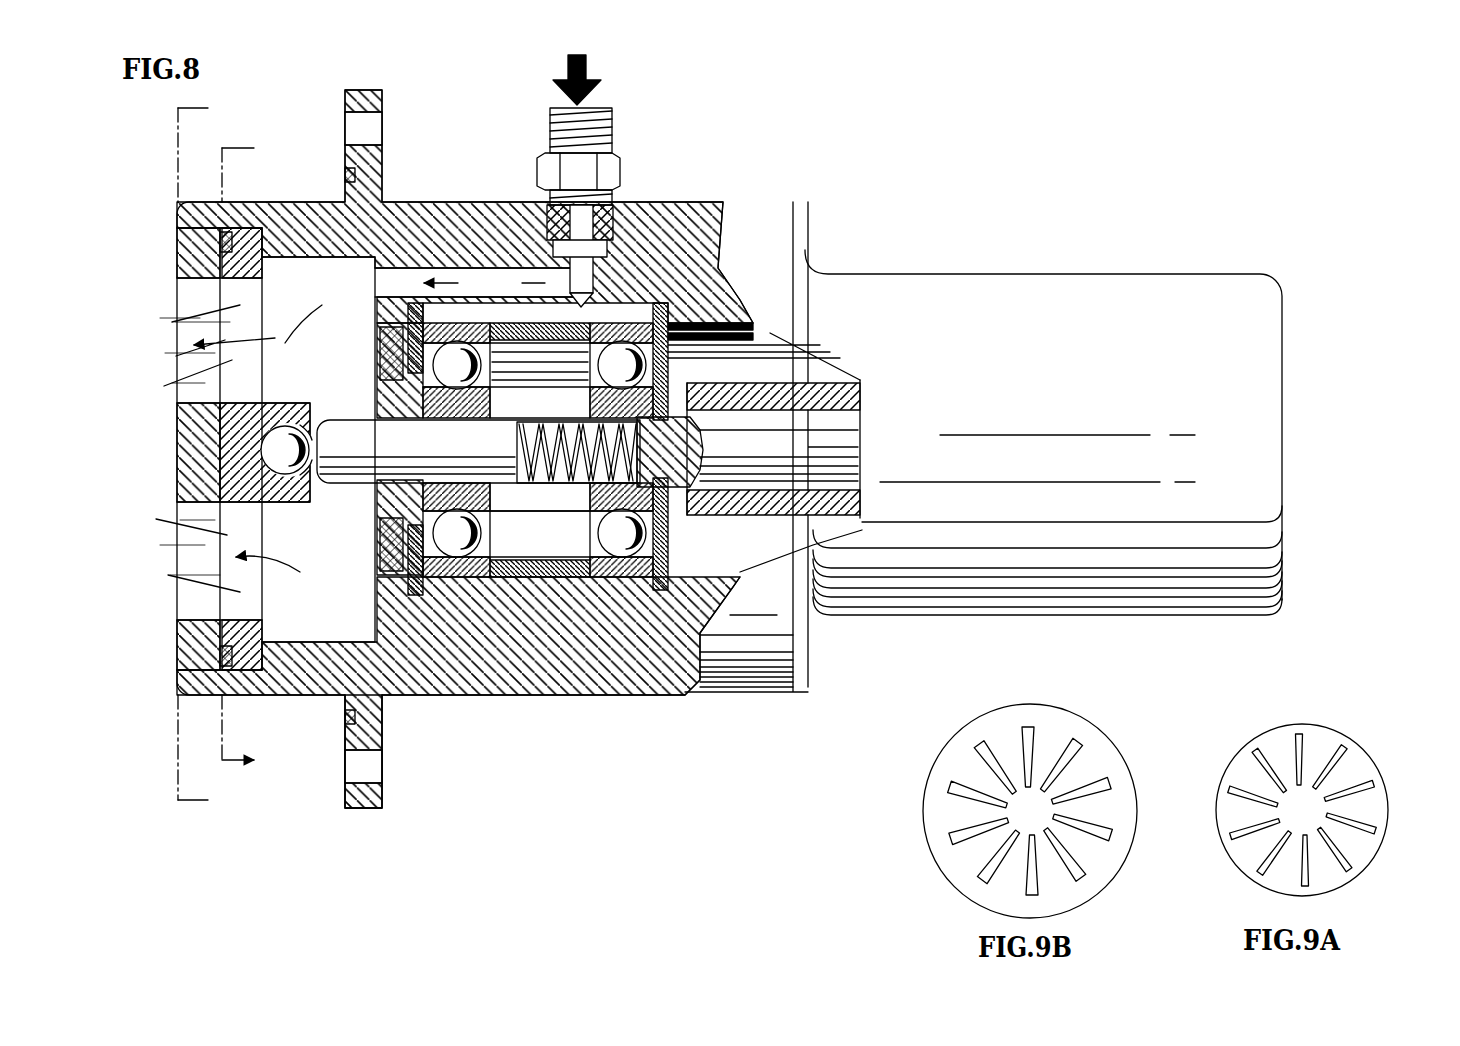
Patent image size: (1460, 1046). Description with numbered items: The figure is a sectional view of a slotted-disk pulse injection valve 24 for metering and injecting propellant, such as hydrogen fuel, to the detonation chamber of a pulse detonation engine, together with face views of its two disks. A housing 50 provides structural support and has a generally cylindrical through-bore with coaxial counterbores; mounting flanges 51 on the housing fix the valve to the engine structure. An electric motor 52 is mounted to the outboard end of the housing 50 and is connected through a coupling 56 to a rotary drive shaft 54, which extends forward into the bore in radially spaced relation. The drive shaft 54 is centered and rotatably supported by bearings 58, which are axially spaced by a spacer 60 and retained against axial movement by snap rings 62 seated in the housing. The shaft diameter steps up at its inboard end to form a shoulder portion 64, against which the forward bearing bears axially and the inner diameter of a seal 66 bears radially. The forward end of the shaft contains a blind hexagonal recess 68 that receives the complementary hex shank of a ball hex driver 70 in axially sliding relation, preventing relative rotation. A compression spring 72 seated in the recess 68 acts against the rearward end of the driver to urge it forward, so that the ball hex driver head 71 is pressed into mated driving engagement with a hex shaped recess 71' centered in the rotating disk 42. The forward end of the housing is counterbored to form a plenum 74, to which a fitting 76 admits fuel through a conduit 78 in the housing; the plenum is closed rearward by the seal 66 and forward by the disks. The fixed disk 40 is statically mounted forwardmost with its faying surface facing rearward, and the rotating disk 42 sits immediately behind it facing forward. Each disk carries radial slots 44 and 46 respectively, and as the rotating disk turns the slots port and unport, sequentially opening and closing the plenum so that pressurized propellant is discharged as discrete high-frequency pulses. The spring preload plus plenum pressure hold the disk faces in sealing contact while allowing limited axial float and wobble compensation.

In FIG. 8, the pulse injection valve 24 is at (912, 158).
In FIG. 8, the fixed disk 40 is at (180, 226).
In FIG. 9B, the fixed disk 40 is at (936, 740).
In FIG. 8, the rotating disk 42 is at (244, 255).
In FIG. 9A, the rotating disk 42 is at (1372, 740).
In FIG. 8, the radial slots 44 is at (222, 286).
In FIG. 9B, the radial slots 44 is at (968, 840).
In FIG. 8, the radial slots 46 is at (262, 290).
In FIG. 9A, the radial slots 46 is at (1365, 827).
In FIG. 8, the housing 50 is at (790, 200).
In FIG. 8, the mounting flanges 51 is at (360, 808).
In FIG. 8, the electric motor 52 is at (1090, 401).
In FIG. 8, the drive shaft 54 is at (800, 432).
In FIG. 8, the coupling 56 is at (830, 385).
In FIG. 8, the bearings 58 is at (470, 572).
In FIG. 8, the spacer 60 is at (560, 580).
In FIG. 8, the snap rings 62 is at (416, 594).
In FIG. 8, the shoulder portion 64 is at (395, 498).
In FIG. 8, the seal 66 is at (390, 340).
In FIG. 8, the hex recess 68 is at (517, 440).
In FIG. 8, the ball hex driver 70 is at (372, 416).
In FIG. 8, the ball hex driver head 71 is at (314, 450).
In FIG. 8, the hex shaped recess 71' is at (322, 430).
In FIG. 8, the compression spring 72 is at (557, 486).
In FIG. 8, the plenum 74 is at (338, 606).
In FIG. 8, the fitting 76 is at (590, 108).
In FIG. 8, the conduit 78 is at (494, 275).